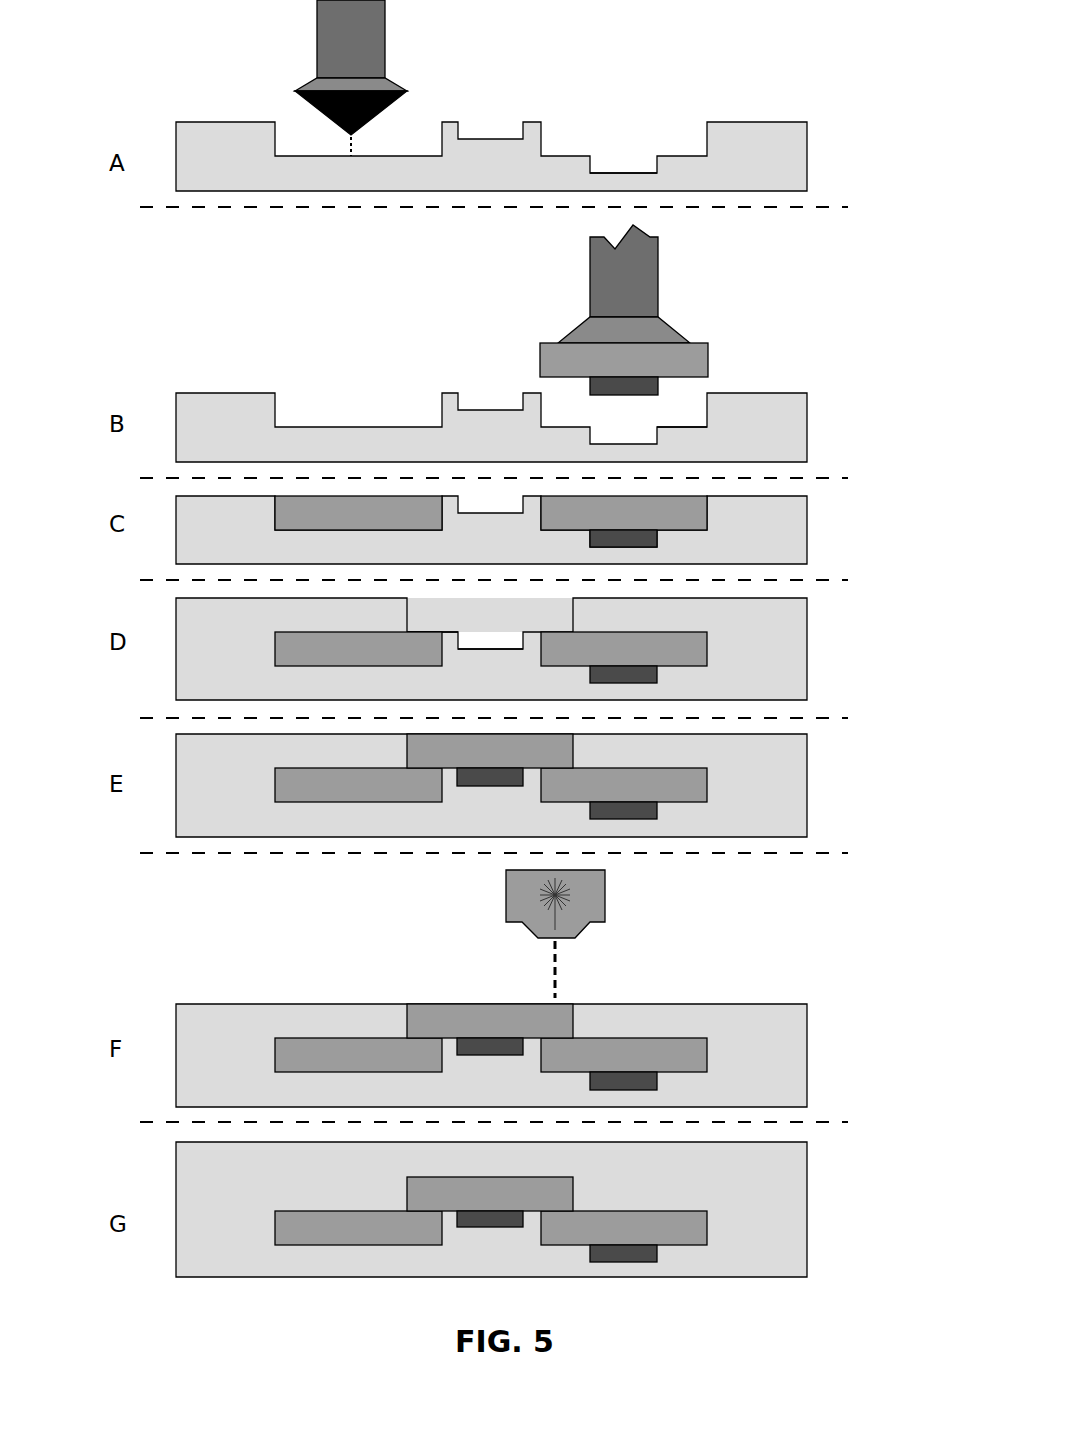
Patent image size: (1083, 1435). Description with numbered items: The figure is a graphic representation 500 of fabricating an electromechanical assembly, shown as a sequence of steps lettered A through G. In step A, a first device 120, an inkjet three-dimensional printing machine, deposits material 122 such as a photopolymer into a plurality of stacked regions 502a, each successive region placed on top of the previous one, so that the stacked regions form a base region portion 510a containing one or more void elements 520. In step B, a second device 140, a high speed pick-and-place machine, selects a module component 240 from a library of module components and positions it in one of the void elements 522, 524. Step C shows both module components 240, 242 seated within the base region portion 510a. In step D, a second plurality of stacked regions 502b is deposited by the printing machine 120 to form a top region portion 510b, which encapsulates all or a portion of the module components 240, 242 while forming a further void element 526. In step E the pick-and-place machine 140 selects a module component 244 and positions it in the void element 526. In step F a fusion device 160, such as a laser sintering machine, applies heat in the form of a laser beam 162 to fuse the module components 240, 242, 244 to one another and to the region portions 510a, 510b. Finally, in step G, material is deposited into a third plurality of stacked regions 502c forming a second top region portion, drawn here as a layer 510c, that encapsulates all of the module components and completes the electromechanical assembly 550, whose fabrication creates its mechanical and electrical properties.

The method of forming a device 500 is at (128, 66).
The first device 120 is at (385, 42).
The material 122 is at (346, 136).
The void element 520 is at (617, 150).
The base region portion 510a is at (766, 136).
The plurality of stacked regions 502a is at (785, 158).
The second device 140 is at (658, 273).
The module component 240 is at (690, 360).
The void element 524 is at (335, 408).
The void element 522 is at (692, 409).
The module component 242 is at (391, 515).
The void element 526 is at (437, 613).
The top region portion 510b is at (770, 606).
The second plurality of stacked regions 502b is at (730, 620).
The module component 244 is at (515, 744).
The fusion device 160 is at (590, 898).
The laser beam 162 is at (556, 970).
The third plurality of stacked regions 502c is at (760, 1157).
The third substrate layer 510c is at (740, 1170).
The electromechanical assembly 550 is at (712, 1297).